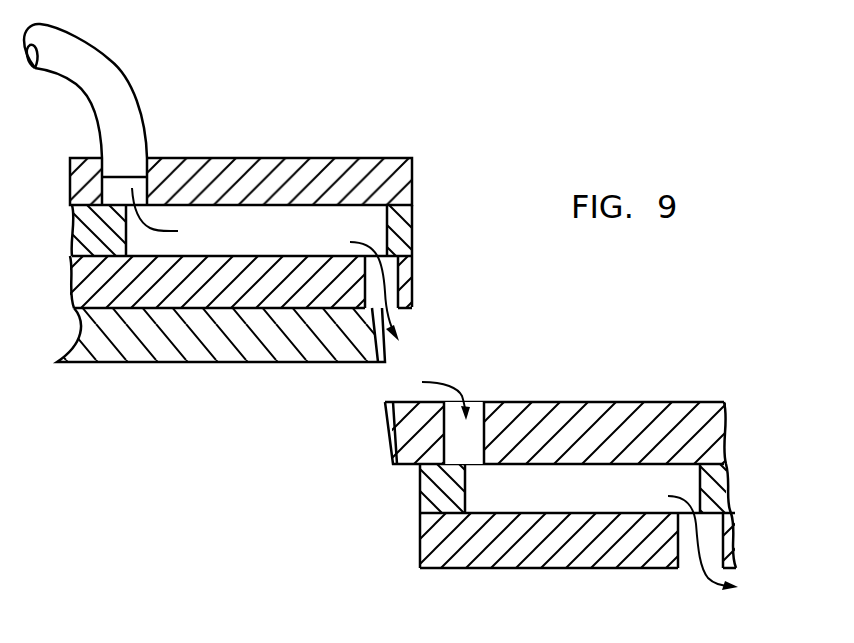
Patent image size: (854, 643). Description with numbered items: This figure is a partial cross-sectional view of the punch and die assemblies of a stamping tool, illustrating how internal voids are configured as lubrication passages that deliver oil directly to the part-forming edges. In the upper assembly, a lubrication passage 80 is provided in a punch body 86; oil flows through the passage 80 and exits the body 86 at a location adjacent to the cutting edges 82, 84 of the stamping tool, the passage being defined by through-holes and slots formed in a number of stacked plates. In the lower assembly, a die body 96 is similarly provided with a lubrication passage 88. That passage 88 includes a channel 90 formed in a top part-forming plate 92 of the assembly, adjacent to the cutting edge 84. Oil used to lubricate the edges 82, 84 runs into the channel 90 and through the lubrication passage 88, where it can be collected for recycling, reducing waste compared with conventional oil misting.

The lubrication passage 80 is at (256, 230).
The cutting edge 82 is at (383, 362).
The cutting edge 84 is at (385, 406).
The punch body 86 is at (277, 193).
The lubrication passage 88 is at (582, 488).
The channel 90 is at (477, 424).
The top part-forming plate 92 is at (555, 401).
The die body 96 is at (512, 464).